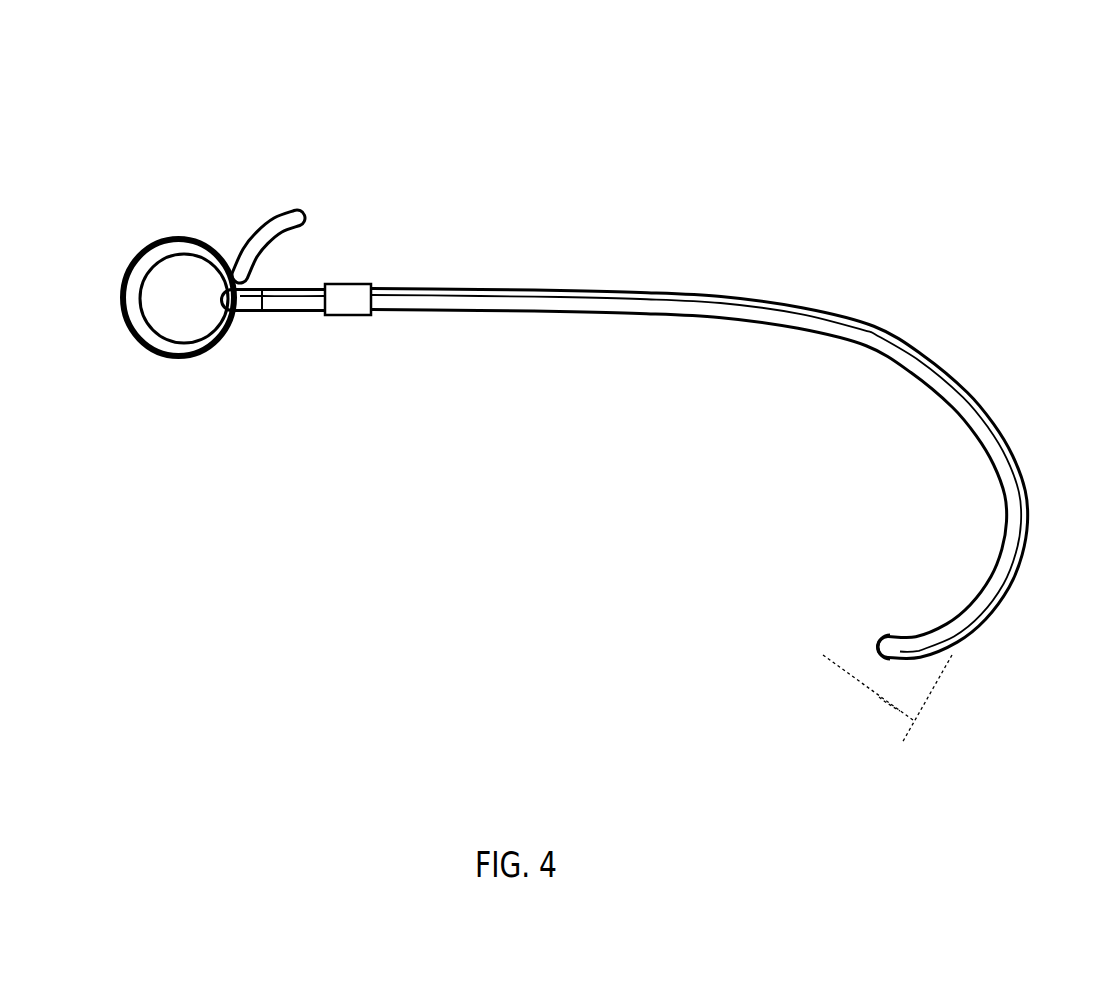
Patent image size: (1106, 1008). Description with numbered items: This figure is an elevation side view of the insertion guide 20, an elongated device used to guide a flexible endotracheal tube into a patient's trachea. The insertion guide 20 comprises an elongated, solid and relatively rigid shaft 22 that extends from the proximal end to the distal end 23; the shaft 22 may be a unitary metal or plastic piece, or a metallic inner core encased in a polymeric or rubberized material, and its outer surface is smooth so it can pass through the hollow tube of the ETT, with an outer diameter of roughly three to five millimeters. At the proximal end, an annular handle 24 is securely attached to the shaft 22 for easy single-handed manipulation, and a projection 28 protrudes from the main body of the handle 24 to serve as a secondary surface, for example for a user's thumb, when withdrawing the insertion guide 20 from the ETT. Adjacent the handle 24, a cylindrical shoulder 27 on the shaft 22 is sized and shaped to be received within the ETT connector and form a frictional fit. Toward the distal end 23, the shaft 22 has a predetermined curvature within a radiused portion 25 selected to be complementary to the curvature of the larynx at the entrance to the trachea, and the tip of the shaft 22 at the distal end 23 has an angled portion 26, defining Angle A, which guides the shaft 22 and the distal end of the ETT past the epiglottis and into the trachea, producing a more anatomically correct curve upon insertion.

The insertion guide 20 is at (157, 143).
The shaft 22 is at (656, 292).
The distal end 23 is at (1015, 567).
The handle 24 is at (131, 260).
The portion 25 is at (906, 377).
The angled portion 26 is at (907, 634).
The cylindrical shoulder 27 is at (352, 282).
The projection 28 is at (278, 211).
The Angle A is at (879, 697).